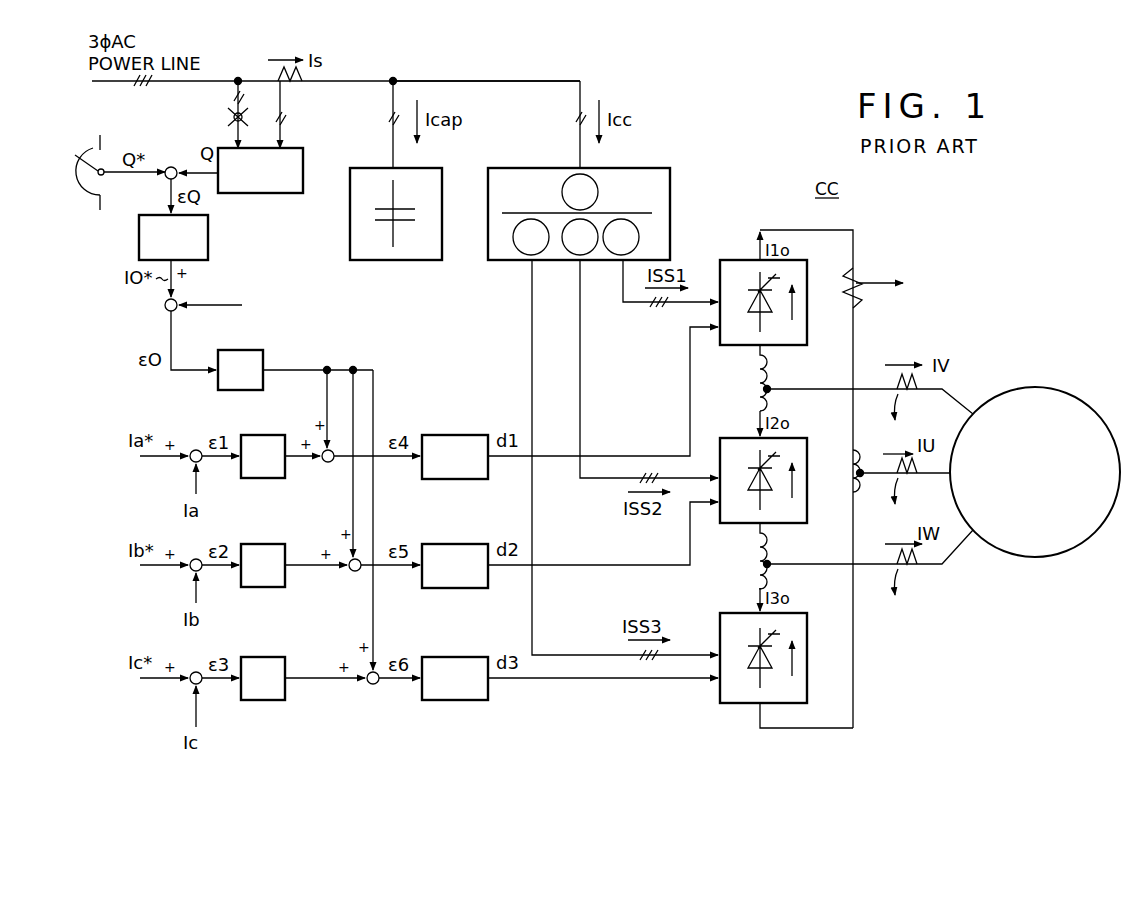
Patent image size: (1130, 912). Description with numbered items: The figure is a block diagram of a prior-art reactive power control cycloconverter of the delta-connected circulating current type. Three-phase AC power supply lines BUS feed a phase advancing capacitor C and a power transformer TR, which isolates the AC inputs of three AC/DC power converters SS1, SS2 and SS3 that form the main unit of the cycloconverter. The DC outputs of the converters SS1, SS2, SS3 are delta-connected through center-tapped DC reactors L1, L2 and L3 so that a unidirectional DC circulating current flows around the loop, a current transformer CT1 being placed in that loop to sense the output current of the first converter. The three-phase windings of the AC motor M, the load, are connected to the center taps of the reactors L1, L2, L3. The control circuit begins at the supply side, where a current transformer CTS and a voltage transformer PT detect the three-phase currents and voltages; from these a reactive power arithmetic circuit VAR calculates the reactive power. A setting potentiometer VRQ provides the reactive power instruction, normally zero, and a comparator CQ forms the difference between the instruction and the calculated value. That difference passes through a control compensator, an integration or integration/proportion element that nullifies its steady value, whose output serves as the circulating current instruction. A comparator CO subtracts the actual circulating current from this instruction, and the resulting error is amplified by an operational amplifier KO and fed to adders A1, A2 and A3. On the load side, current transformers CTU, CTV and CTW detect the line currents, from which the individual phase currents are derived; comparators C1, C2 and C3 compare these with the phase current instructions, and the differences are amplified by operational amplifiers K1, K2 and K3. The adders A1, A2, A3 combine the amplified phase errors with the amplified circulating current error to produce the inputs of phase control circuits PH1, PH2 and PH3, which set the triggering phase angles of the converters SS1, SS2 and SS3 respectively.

The reactive power setting potentiometer VRQ is at (117, 162).
The comparator CQ is at (169, 168).
The reactive power arithmetic circuit VAR is at (260, 170).
The voltage transformer PT is at (220, 114).
The current transformer CTS is at (300, 107).
The comparator CO is at (165, 310).
The operational amplifier KO is at (240, 370).
The phase advancing capacitor C is at (422, 262).
The power transformer TR is at (656, 173).
The power supply lines BUS is at (516, 81).
The comparator C1 is at (196, 451).
The comparator C2 is at (196, 560).
The comparator C3 is at (196, 673).
The operational amplifier K1 is at (263, 456).
The operational amplifier K2 is at (263, 565).
The operational amplifier K3 is at (263, 678).
The adder A1 is at (328, 463).
The adder A2 is at (355, 572).
The adder A3 is at (373, 685).
The phase control circuit PH1 is at (455, 457).
The phase control circuit PH2 is at (455, 566).
The phase control circuit PH3 is at (455, 678).
The AC/DC power converter SS1 is at (777, 284).
The AC/DC power converter SS2 is at (777, 467).
The AC/DC power converter SS3 is at (777, 645).
The DC reactor L1 is at (848, 489).
The DC reactor L2 is at (745, 378).
The DC reactor L3 is at (745, 556).
The current transformer CT1 is at (890, 292).
The current transformer CTV is at (917, 399).
The current transformer CTU is at (917, 483).
The current transformer CTW is at (920, 575).
The 3-phase AC motor M is at (1035, 472).